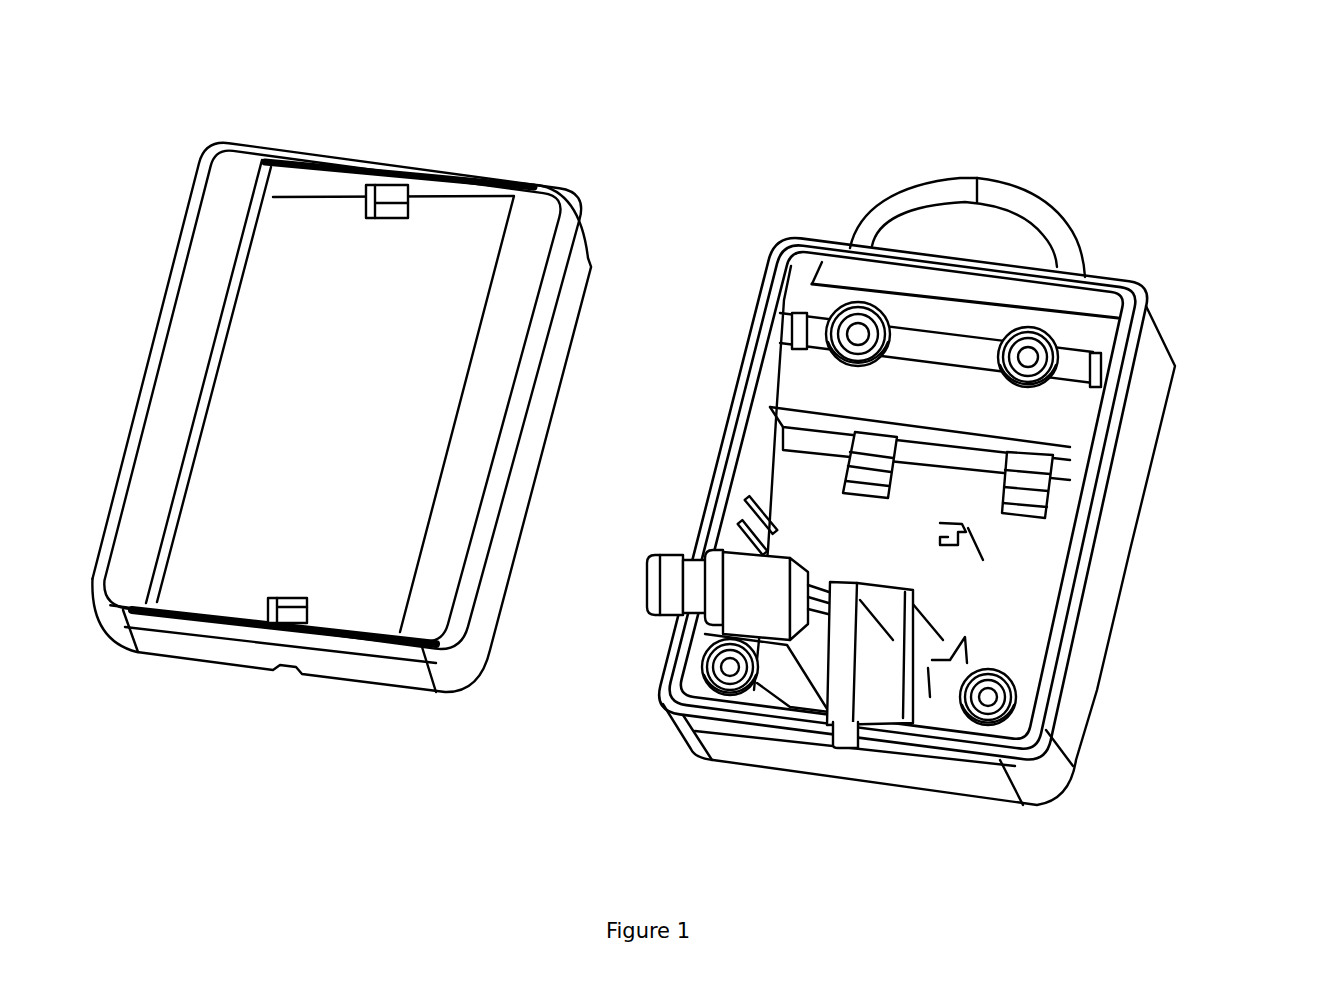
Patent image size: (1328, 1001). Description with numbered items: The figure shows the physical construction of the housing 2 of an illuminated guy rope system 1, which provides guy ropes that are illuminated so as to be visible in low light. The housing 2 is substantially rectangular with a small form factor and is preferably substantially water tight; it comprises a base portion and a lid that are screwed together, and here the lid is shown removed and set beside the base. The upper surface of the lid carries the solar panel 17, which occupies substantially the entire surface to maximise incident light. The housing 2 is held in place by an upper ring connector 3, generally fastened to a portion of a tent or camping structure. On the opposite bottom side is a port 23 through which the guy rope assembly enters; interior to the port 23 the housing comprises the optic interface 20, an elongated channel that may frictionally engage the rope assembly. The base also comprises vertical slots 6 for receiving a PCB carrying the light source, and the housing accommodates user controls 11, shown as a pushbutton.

The illuminated guy rope system 1 is at (705, 425).
The housing 2 is at (1097, 560).
The upper ring connector 3 is at (1076, 232).
The vertical slots / PCB 6 is at (847, 550).
The user controls 11 is at (734, 595).
The solar panel 17 is at (320, 399).
The optic interface 20 is at (847, 670).
The port 23 is at (845, 752).